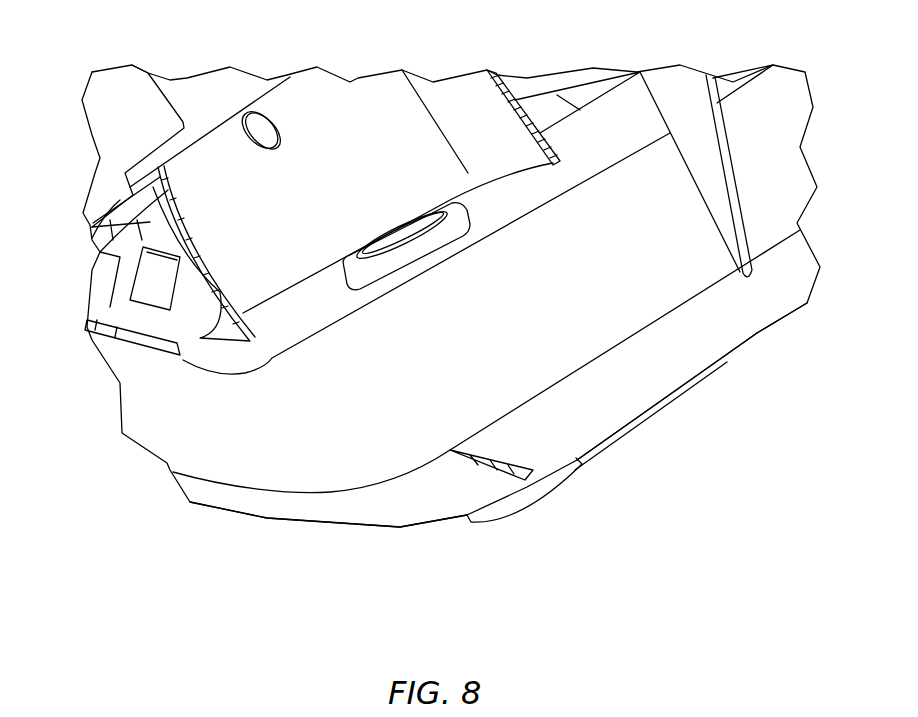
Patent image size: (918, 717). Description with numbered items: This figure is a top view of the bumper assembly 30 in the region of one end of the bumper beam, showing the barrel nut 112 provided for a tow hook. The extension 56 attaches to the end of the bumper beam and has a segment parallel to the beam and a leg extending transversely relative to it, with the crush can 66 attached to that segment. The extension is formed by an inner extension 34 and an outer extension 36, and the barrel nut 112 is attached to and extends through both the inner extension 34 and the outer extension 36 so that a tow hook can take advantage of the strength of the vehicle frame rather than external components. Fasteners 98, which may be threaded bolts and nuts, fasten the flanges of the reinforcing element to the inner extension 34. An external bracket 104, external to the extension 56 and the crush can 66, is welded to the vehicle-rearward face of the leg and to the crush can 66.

The bumper assembly 30 is at (700, 468).
The inner extension 34 is at (607, 97).
The outer extension 36 is at (757, 335).
The extension 56 is at (343, 527).
The crush can 66 is at (512, 78).
The fasteners 98 is at (100, 287).
The external bracket 104 is at (150, 223).
The barrel nut 112 is at (523, 513).